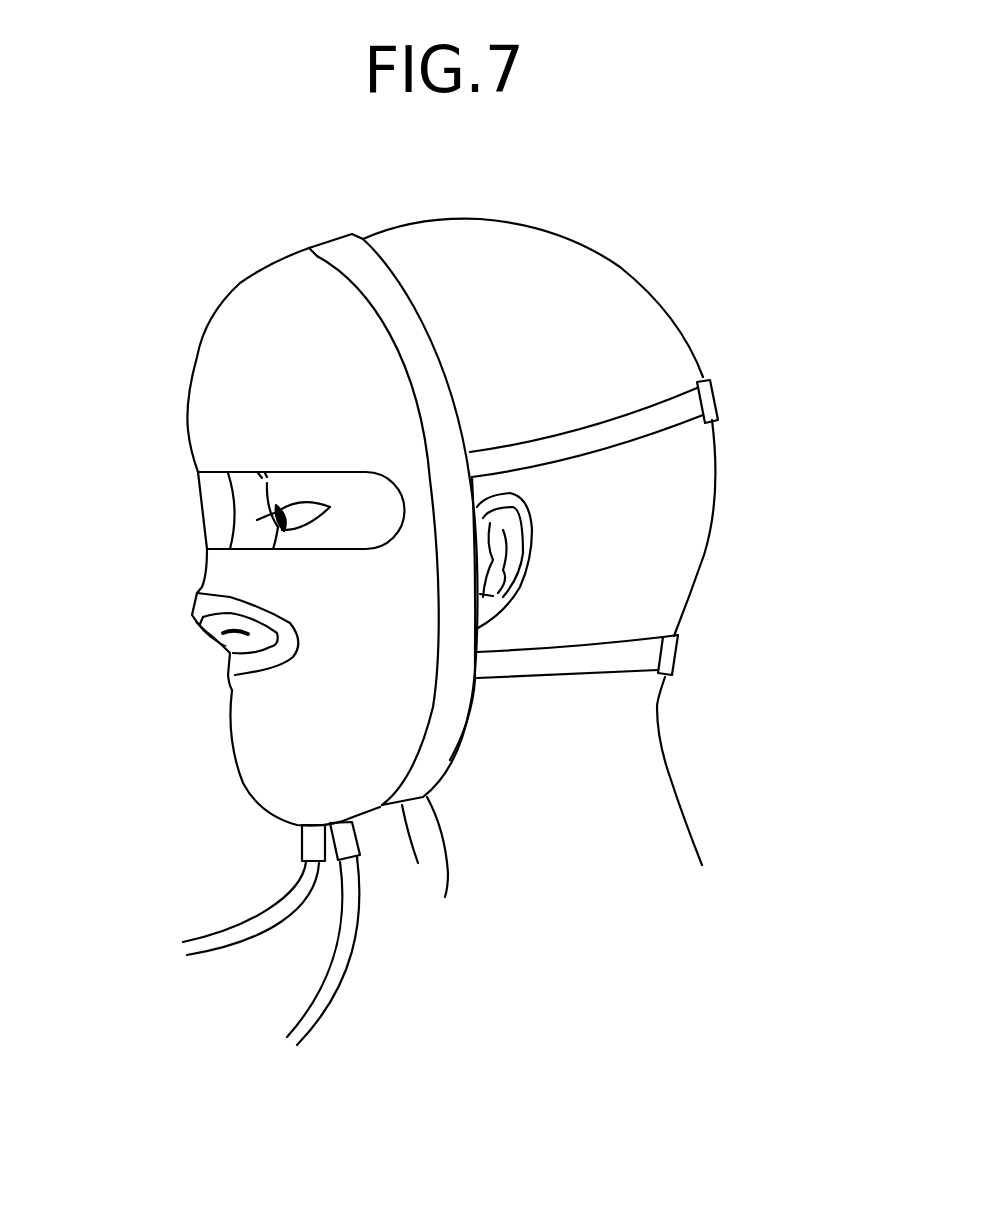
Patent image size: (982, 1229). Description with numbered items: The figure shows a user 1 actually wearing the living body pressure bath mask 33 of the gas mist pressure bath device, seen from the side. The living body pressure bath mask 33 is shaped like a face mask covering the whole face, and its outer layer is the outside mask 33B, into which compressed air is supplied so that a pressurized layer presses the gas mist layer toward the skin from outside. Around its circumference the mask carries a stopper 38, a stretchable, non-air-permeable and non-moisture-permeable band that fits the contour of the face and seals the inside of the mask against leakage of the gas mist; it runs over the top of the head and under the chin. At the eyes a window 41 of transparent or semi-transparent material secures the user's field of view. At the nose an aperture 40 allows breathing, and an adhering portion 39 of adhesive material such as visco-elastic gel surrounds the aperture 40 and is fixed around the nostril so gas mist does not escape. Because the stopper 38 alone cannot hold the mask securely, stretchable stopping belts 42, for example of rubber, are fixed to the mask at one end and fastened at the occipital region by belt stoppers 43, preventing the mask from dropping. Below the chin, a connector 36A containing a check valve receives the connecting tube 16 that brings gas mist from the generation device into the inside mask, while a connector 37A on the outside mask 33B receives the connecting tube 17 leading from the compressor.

The user 1 is at (715, 483).
The living body pressure bath mask 33 is at (235, 482).
The outside mask 33B is at (187, 377).
The stopper 38 is at (330, 237).
The window 41 is at (207, 522).
The adhering portion 39 is at (195, 607).
The aperture 40 is at (200, 647).
The stopping belt 42 is at (553, 433).
The belt stopper 43 is at (703, 380).
The connector 37A is at (300, 843).
The connector 36A is at (358, 840).
The connecting tube 17 is at (198, 935).
The connecting tube 16 is at (357, 943).